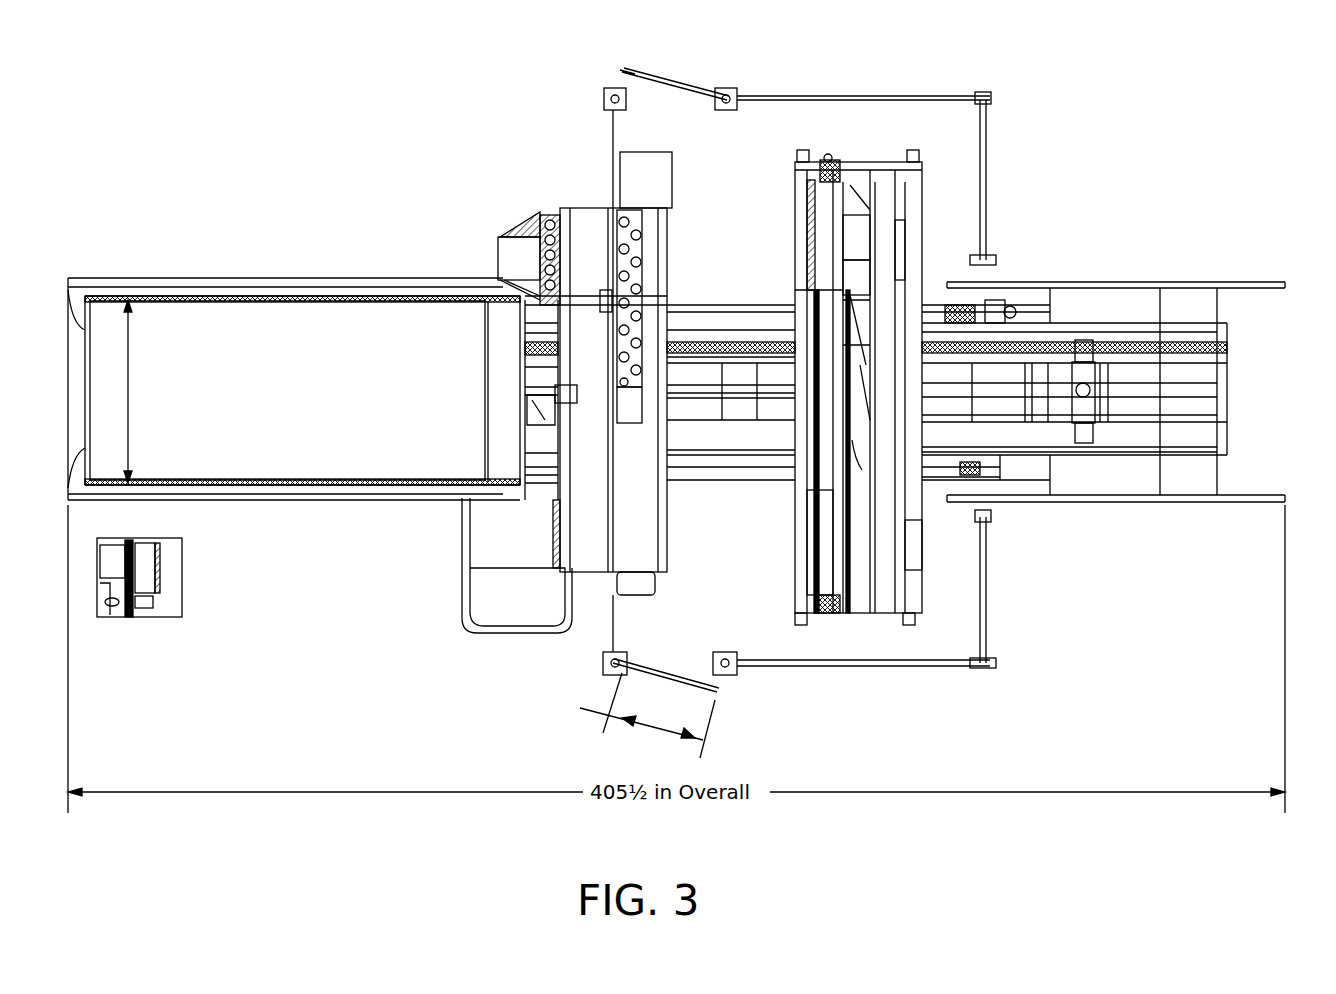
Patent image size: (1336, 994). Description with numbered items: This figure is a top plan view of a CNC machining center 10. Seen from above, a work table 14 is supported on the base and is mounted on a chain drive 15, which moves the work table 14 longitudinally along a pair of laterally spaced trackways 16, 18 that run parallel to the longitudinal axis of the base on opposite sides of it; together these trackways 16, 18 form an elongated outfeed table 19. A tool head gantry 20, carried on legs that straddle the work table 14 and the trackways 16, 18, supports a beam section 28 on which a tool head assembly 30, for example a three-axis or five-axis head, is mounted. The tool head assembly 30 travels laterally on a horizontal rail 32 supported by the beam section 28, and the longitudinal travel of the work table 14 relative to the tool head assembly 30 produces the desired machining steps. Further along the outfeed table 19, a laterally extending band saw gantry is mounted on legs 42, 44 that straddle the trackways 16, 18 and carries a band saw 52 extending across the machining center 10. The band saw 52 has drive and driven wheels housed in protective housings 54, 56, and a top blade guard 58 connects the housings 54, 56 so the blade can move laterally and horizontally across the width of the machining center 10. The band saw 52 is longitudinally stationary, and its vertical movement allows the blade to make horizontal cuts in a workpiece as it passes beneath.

The CNC machining center 10 is at (425, 122).
The work table 14 is at (170, 325).
The chain drive 15 is at (540, 412).
The trackway 16 is at (1240, 282).
The trackway 18 is at (1255, 495).
The outfeed table 19 is at (1258, 383).
The tool head gantry 20 is at (592, 235).
The beam section 28 is at (558, 205).
The tool head assembly 30 is at (515, 262).
The horizontal rail 32 is at (554, 545).
The leg 42 is at (830, 178).
The leg 44 is at (830, 618).
The band saw 52 is at (879, 130).
The protective housing 54 is at (820, 222).
The protective housing 56 is at (818, 565).
The top blade guard 58 is at (825, 316).